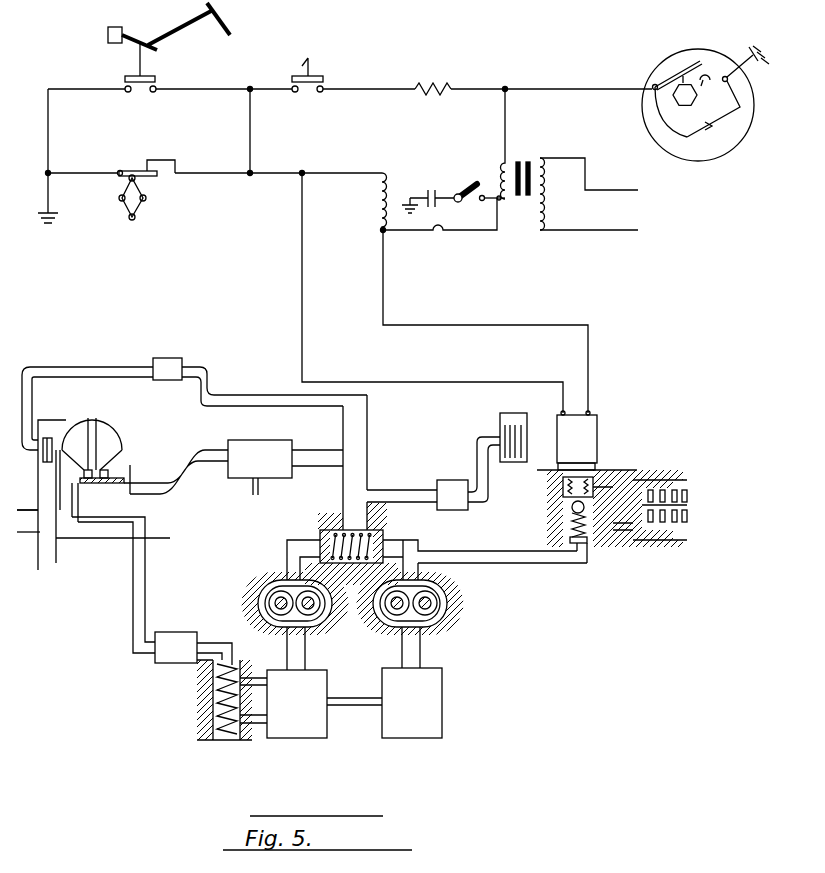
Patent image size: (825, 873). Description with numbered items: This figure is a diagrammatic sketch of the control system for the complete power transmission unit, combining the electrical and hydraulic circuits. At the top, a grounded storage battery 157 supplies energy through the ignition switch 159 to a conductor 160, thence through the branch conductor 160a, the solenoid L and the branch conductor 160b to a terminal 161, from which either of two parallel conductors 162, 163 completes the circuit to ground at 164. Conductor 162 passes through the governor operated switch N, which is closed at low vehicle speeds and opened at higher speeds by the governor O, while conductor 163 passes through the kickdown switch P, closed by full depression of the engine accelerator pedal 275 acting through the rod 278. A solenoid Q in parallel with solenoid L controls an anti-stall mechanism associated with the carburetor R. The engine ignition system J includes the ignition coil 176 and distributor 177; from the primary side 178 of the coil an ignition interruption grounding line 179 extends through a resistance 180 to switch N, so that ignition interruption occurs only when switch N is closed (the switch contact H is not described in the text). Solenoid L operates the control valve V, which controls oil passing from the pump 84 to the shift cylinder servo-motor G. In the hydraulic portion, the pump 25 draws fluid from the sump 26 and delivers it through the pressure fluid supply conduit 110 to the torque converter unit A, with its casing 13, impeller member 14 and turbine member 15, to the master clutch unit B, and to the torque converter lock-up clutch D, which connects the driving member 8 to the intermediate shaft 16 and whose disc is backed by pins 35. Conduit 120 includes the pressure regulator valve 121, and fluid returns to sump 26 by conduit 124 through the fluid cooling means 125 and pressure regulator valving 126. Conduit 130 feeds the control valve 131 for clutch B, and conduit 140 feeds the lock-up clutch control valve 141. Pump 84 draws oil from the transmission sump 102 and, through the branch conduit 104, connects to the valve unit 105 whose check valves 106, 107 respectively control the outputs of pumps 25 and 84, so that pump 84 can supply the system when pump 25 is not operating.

The engine accelerator pedal 275 is at (230, 30).
The rod 278 is at (167, 32).
The carburetor R is at (108, 35).
The kickdown switch P is at (140, 58).
The conductor 163 is at (190, 89).
The switch H is at (313, 62).
The engine ignition system J is at (373, 81).
The resistance 180 is at (428, 84).
The ignition interruption grounding line 179 is at (505, 88).
The distributor 177 is at (660, 70).
The ground 164 is at (58, 217).
The conductor 162 is at (187, 173).
The governor operated switch N is at (162, 176).
The governor O is at (146, 206).
The terminal 161 is at (250, 175).
The solenoid Q is at (380, 205).
The conductor 160 is at (462, 232).
The storage battery 157 is at (431, 189).
The ignition switch 159 is at (472, 184).
The primary side of the coil 178 is at (503, 165).
The ignition coil 176 is at (521, 203).
The branch conductor 160b is at (397, 293).
The branch conductor 160a is at (448, 326).
The torque converter lock-up clutch control valve 141 is at (162, 358).
The conduit 140 is at (240, 395).
The torque converter lock-up clutch D is at (47, 437).
The torque converter unit A is at (113, 419).
The torque converter casing 13 is at (66, 425).
The turbine or runner member 15 is at (80, 432).
The impeller member 14 is at (110, 432).
The intermediate shaft 16 is at (160, 512).
The pins 35 is at (40, 510).
The driving member 8 is at (20, 532).
The conduit 124 is at (133, 612).
The pressure regulator valve 121 is at (283, 422).
The conduit 120 is at (333, 467).
The pressure fluid supply conduit 110 is at (370, 470).
The conduit 130 is at (437, 505).
The control valve 131 is at (458, 464).
The master clutch unit B is at (515, 415).
The solenoid L is at (600, 438).
The control valve V is at (561, 500).
The shift cylinder servo-motor G is at (664, 479).
The branch conduit 104 is at (412, 546).
The check valve 106 is at (329, 541).
The check valve 107 is at (413, 518).
The valve unit 105 is at (342, 564).
The pump 25 is at (256, 606).
The pump 84 is at (449, 607).
The fluid cooling means 125 is at (168, 663).
The pressure regulator valving 126 is at (205, 715).
The sump 26 is at (300, 738).
The transmission sump 102 is at (432, 692).